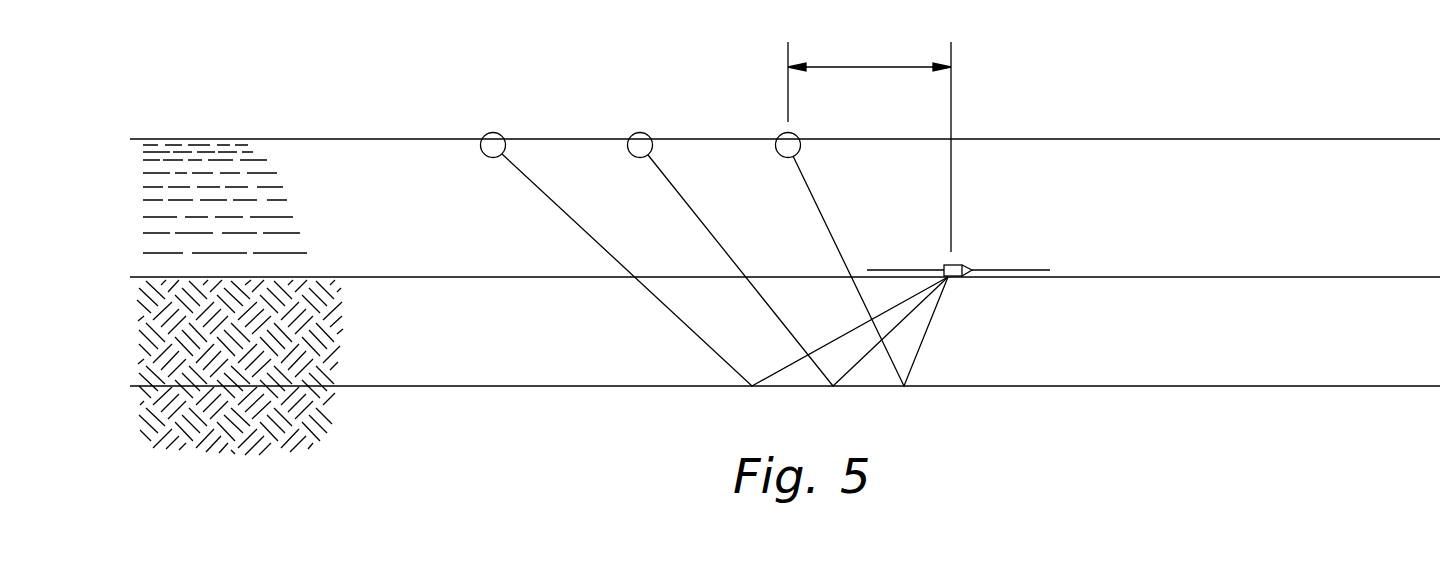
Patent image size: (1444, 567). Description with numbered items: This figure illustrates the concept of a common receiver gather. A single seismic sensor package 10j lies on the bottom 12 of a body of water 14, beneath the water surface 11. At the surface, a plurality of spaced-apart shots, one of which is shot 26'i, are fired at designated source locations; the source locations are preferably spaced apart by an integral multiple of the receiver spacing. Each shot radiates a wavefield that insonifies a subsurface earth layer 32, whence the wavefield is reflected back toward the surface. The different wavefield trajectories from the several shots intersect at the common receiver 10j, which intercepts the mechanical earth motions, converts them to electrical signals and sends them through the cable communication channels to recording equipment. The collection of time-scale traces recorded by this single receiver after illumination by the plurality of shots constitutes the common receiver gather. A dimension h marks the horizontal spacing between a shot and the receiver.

The water surface 11 is at (1343, 139).
The bottom of a body of water 12 is at (1352, 277).
The subsurface earth layer 32 is at (1353, 386).
The body of water 14 is at (1203, 225).
The shot 26'i is at (848, 260).
The seismic sensor package 10j is at (962, 265).
The horizontal offset between virtual source and receiver h is at (859, 66).